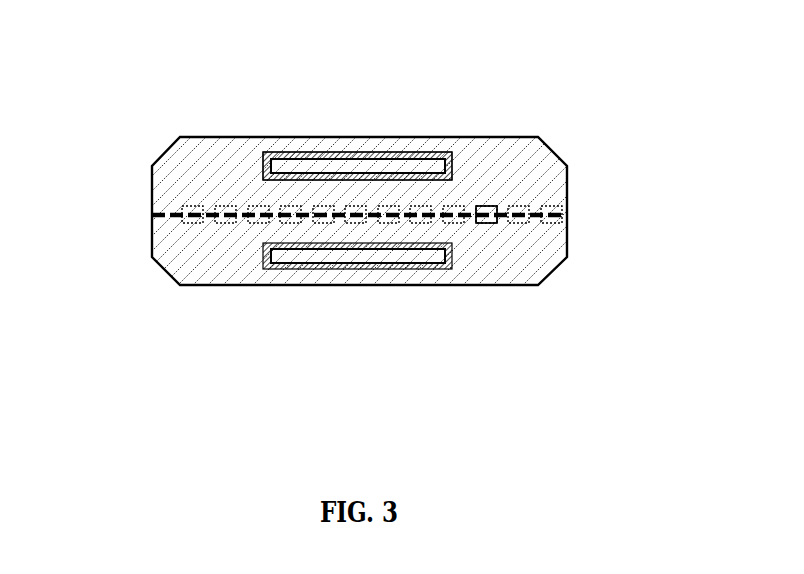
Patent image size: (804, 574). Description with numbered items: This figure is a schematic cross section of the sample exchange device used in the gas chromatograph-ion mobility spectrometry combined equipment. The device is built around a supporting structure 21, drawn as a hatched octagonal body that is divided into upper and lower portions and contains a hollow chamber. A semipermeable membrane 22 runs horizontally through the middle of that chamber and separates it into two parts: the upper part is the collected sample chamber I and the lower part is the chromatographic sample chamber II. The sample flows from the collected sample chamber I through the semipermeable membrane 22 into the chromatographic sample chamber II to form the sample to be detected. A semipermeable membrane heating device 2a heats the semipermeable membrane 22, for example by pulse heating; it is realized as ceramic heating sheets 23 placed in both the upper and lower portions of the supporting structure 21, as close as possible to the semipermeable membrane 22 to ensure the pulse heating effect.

The supporting structure 21 is at (364, 146).
The semipermeable membrane 22 is at (359, 315).
The ceramic heating sheets 23 is at (357, 220).
The semipermeable membrane heating device 2a is at (292, 167).
The collected sample chamber I is at (552, 120).
The chromatographic sample chamber II is at (566, 300).